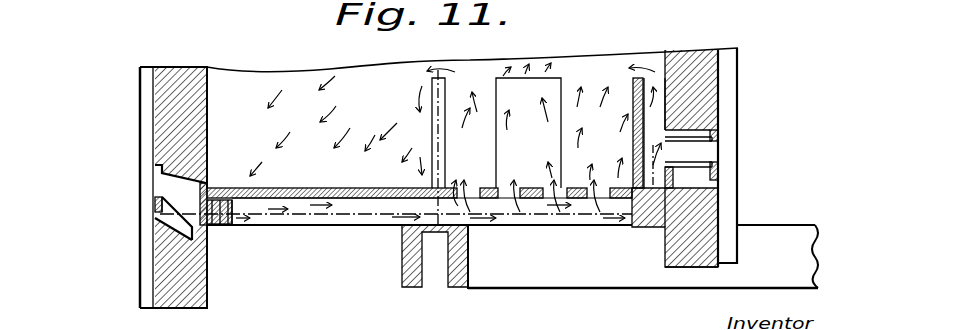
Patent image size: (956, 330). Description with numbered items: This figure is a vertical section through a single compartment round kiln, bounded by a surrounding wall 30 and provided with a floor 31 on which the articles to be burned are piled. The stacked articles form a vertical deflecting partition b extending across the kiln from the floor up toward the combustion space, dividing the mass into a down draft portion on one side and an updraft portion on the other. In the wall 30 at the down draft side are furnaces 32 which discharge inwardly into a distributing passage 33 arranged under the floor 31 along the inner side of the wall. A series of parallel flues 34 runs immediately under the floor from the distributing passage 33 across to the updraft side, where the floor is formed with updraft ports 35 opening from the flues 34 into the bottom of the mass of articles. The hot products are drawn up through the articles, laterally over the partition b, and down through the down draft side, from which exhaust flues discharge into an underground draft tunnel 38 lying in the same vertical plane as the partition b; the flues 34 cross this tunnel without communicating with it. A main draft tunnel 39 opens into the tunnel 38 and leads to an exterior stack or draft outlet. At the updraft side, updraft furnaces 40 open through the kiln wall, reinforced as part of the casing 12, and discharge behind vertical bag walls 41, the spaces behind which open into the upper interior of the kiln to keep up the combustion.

The casing wall 12 is at (130, 232).
The inclosing wall 30 is at (193, 126).
The floor 31 is at (303, 188).
The furnaces or burners 32 is at (177, 186).
The distributing passage 33 is at (224, 226).
The flues 34 is at (358, 214).
The updraft ports 35 is at (498, 188).
The draft tunnel 38 is at (441, 276).
The main draft tunnel 39 is at (643, 258).
The updraft furnaces 40 is at (688, 149).
The bag walls 41 is at (549, 102).
The deflecting partition b is at (430, 102).